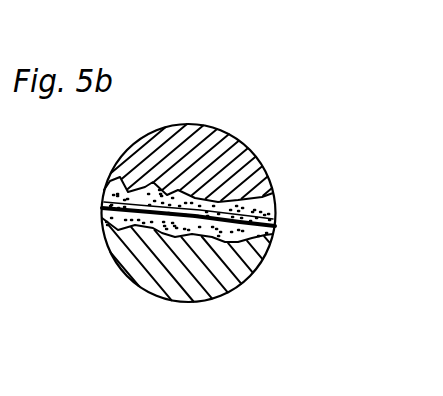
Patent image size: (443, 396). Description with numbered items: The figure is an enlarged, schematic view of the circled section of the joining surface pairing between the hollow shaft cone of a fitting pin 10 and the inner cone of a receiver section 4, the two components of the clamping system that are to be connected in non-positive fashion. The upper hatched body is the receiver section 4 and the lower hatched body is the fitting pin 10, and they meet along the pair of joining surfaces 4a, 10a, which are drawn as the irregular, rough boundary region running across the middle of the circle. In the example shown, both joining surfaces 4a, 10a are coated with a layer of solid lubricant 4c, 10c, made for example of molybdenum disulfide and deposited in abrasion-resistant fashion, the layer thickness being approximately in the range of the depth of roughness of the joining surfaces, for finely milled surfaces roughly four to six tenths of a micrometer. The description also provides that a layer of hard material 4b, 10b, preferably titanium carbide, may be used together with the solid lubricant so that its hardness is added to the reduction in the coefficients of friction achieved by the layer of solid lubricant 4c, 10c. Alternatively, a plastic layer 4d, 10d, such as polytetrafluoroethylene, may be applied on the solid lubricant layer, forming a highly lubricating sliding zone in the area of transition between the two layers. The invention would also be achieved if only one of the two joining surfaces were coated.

The receiver section 4 is at (251, 156).
The joining surface 4a is at (270, 212).
The layer of hard material 4b is at (198, 205).
The layer of solid lubricant 4c is at (259, 186).
The plastic layer 4d is at (203, 205).
The fitting pin 10 is at (220, 285).
The joining surface 10a is at (268, 240).
The layer of hard material 10b is at (150, 218).
The layer of solid lubricant 10c is at (222, 243).
The plastic layer 10d is at (104, 222).